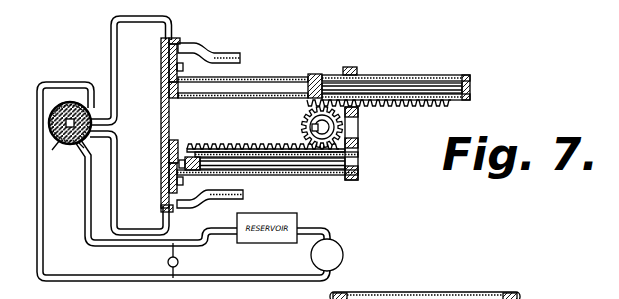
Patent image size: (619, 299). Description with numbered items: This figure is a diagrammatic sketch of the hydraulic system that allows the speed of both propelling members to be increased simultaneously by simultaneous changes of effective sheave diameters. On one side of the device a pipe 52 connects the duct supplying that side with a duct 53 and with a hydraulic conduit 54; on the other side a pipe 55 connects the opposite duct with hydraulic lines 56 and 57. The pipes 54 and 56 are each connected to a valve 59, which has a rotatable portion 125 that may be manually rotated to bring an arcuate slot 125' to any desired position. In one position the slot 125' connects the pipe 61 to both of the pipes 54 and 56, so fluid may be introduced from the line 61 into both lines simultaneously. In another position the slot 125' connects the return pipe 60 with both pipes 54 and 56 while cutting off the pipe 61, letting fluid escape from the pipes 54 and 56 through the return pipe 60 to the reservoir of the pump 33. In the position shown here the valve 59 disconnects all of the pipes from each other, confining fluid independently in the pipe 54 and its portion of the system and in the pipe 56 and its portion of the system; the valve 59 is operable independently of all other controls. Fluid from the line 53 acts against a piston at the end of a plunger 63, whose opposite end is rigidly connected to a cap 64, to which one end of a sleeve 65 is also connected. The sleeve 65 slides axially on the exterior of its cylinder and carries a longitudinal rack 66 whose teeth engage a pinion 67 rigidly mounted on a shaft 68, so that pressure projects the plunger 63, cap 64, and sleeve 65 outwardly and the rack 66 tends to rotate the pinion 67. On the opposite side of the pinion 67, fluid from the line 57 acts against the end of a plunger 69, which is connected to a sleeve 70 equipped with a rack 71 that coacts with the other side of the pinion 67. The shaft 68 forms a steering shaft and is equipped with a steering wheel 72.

The pump 33 is at (336, 244).
The pipe 52 is at (226, 200).
The duct 53 is at (169, 183).
The hydraulic conduit 54 is at (150, 228).
The pipe 55 is at (224, 52).
The hydraulic line 56 is at (147, 22).
The hydraulic line 57 is at (163, 66).
The valve 59 is at (72, 143).
The return pipe 60 is at (86, 216).
The pipe 61 is at (44, 187).
The plunger 63 is at (252, 158).
The cap 64 is at (356, 175).
The sleeve 65 is at (300, 151).
The rack 66 is at (218, 146).
The pinion 67 is at (333, 128).
The shaft 68 is at (306, 118).
The plunger 69 is at (388, 82).
The sleeve 70 is at (436, 76).
The rack 71 is at (428, 110).
The steering wheel 72 is at (496, 294).
The rotatable portion 125 is at (71, 104).
The arcuate slot 125' is at (58, 105).